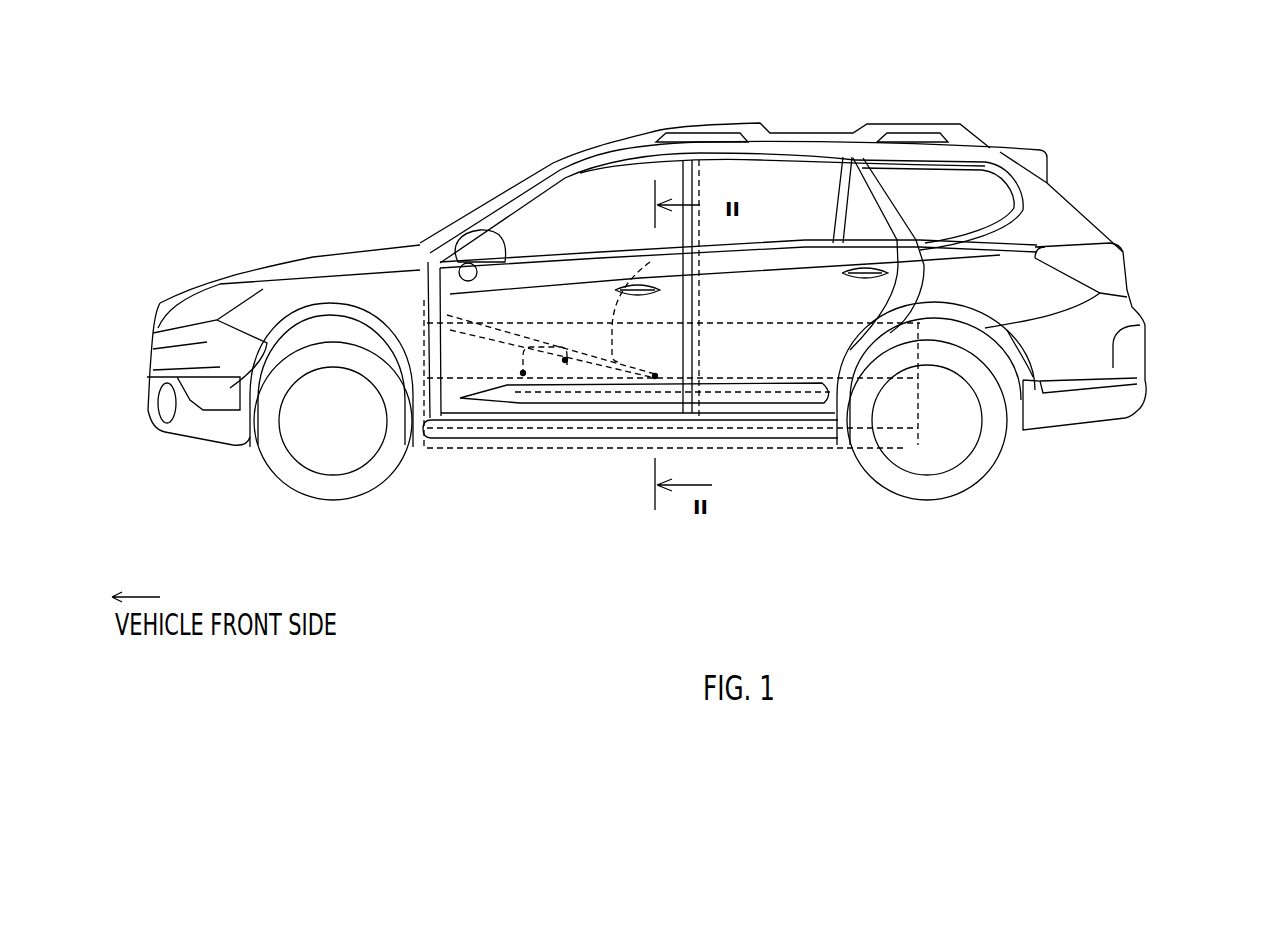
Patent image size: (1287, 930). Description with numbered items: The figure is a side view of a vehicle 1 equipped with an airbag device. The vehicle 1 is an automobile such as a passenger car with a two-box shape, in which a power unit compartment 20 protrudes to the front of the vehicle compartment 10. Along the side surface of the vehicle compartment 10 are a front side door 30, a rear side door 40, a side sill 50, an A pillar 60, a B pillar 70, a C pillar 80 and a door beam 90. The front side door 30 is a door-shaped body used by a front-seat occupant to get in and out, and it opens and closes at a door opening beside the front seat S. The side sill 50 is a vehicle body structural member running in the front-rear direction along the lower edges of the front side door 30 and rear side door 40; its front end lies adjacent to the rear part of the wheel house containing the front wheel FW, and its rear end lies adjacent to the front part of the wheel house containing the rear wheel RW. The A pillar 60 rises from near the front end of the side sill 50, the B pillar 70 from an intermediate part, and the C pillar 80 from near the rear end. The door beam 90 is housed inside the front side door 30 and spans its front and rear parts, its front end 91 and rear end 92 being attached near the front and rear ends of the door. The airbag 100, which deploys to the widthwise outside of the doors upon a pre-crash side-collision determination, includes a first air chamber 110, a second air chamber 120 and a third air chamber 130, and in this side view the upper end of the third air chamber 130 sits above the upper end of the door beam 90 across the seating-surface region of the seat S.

The vehicle 1 is at (209, 156).
The vehicle compartment 10 is at (553, 163).
The power unit compartment 20 is at (313, 257).
The front side door 30 is at (592, 255).
The rear side door 40 is at (768, 250).
The side sill 50 is at (815, 435).
The A pillar 60 is at (405, 400).
The B pillar 70 is at (712, 425).
The C pillar 80 is at (913, 255).
The door beam 90 is at (558, 385).
The front end of the door beam 91 is at (418, 248).
The rear end of the door beam 92 is at (643, 395).
The airbag 100 is at (920, 327).
The first air chamber 110 is at (918, 397).
The second air chamber 120 is at (915, 440).
The third air chamber 130 is at (918, 352).
The front seat S is at (500, 395).
The front wheel FW is at (290, 480).
The rear wheel RW is at (968, 487).